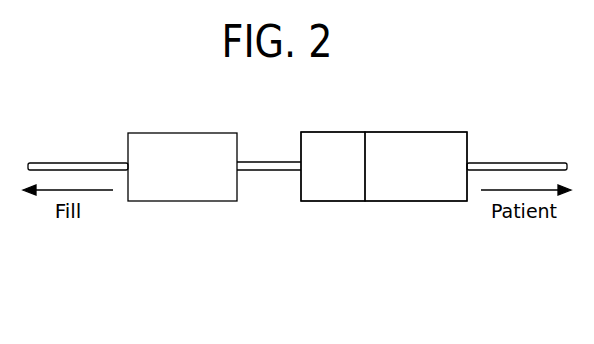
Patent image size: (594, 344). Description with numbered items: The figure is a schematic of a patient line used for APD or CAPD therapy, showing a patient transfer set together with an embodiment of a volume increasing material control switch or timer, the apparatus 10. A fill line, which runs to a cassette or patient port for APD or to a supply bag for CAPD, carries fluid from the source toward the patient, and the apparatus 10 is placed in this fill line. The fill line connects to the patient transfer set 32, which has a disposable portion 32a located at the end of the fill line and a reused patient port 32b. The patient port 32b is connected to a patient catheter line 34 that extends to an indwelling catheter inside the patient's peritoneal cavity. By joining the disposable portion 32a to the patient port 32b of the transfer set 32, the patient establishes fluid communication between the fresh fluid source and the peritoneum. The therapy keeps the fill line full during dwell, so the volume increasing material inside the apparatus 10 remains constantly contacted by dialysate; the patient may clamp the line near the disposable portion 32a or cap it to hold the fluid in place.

The apparatus 10 is at (182, 167).
The patient transfer set 32 is at (364, 199).
The disposable portion 32a is at (333, 166).
The patient port 32b is at (416, 166).
The patient catheter line 34 is at (521, 162).